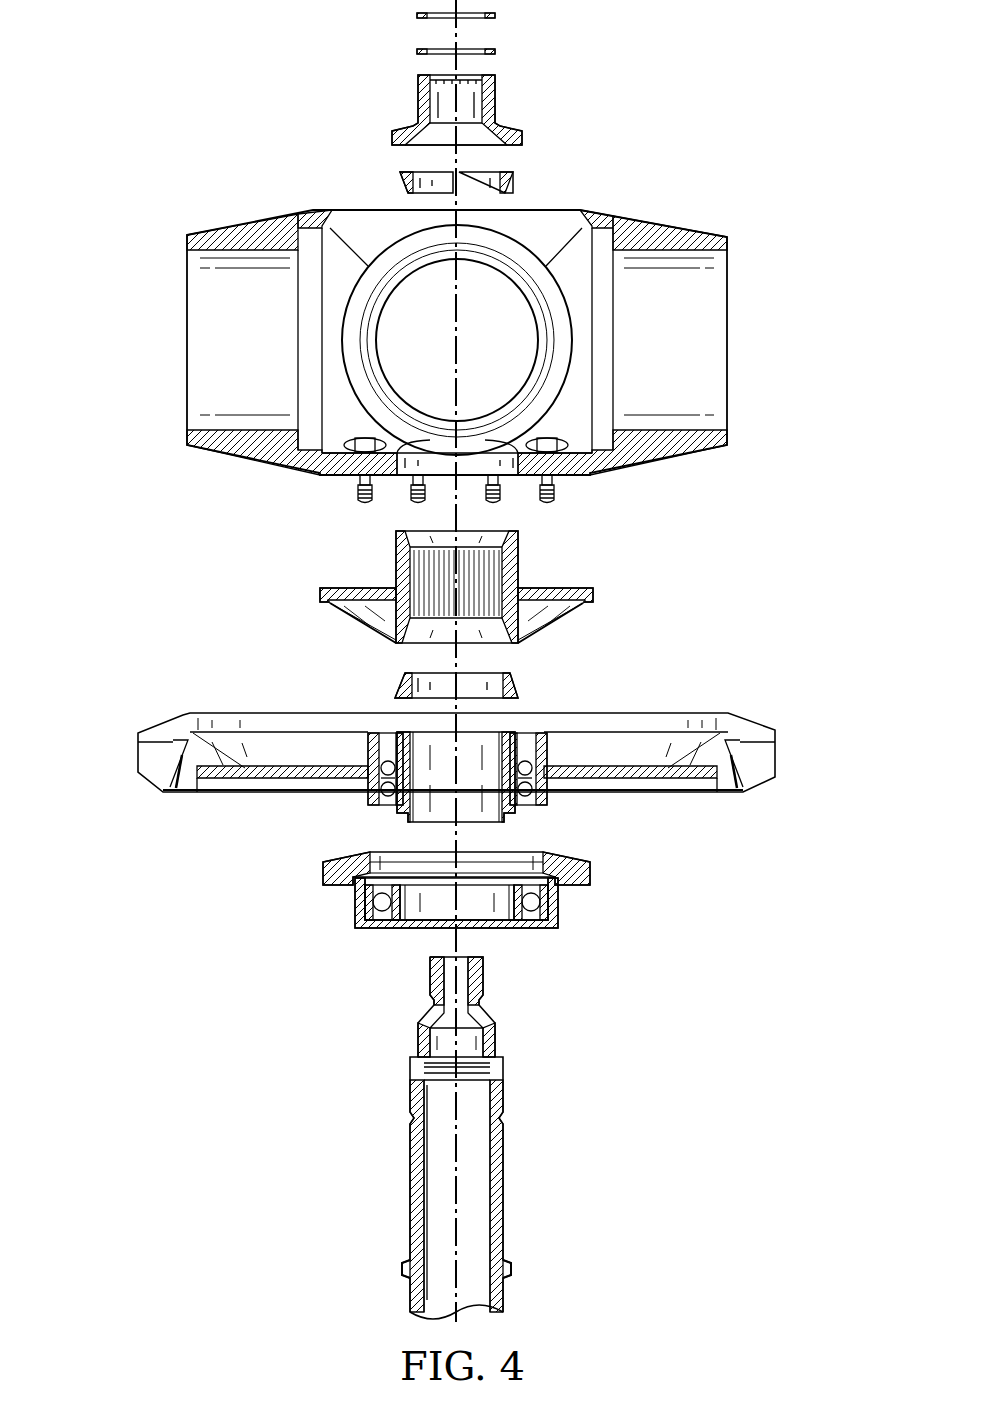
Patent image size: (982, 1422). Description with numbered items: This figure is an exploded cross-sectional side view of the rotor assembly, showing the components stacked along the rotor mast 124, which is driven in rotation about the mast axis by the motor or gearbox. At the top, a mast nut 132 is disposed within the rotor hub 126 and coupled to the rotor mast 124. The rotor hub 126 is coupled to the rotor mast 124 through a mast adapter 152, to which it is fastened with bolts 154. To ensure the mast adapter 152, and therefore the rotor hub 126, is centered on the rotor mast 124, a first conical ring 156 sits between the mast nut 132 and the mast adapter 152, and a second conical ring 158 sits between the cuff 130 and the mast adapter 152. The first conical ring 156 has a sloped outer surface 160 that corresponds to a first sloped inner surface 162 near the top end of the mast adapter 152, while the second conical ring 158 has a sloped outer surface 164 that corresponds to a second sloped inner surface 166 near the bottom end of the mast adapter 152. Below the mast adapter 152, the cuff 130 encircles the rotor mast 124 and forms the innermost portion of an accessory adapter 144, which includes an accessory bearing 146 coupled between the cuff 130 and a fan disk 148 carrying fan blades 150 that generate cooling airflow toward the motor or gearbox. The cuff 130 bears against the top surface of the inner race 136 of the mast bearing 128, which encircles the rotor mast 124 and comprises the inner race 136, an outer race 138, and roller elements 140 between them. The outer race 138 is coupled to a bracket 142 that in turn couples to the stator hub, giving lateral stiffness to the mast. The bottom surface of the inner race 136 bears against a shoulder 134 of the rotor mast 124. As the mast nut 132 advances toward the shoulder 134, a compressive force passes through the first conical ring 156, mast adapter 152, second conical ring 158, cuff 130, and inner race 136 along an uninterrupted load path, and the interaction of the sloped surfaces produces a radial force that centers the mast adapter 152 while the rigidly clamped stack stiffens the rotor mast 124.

The rotor mast 124 is at (411, 1164).
The rotor hub 126 is at (662, 231).
The mast bearing 128 is at (525, 930).
The cuff 130 is at (398, 812).
The mast nut 132 is at (418, 99).
The shoulder 134 is at (402, 1268).
The inner race 136 is at (398, 919).
The outer race 138 is at (356, 892).
The roller elements 140 is at (548, 892).
The bracket 142 is at (323, 867).
The accessory adapter 144 is at (160, 790).
The accessory bearing 146 is at (377, 763).
The fan disk 148 is at (737, 712).
The fan blades 150 is at (138, 752).
The mast adapter 152 is at (320, 593).
The bolts 154 is at (358, 481).
The first conical ring 156 is at (400, 181).
The second conical ring 158 is at (395, 691).
The sloped outer surface 160 is at (513, 186).
The first sloped inner surface 162 is at (396, 533).
The sloped outer surface 164 is at (510, 684).
The second sloped inner surface 166 is at (400, 641).